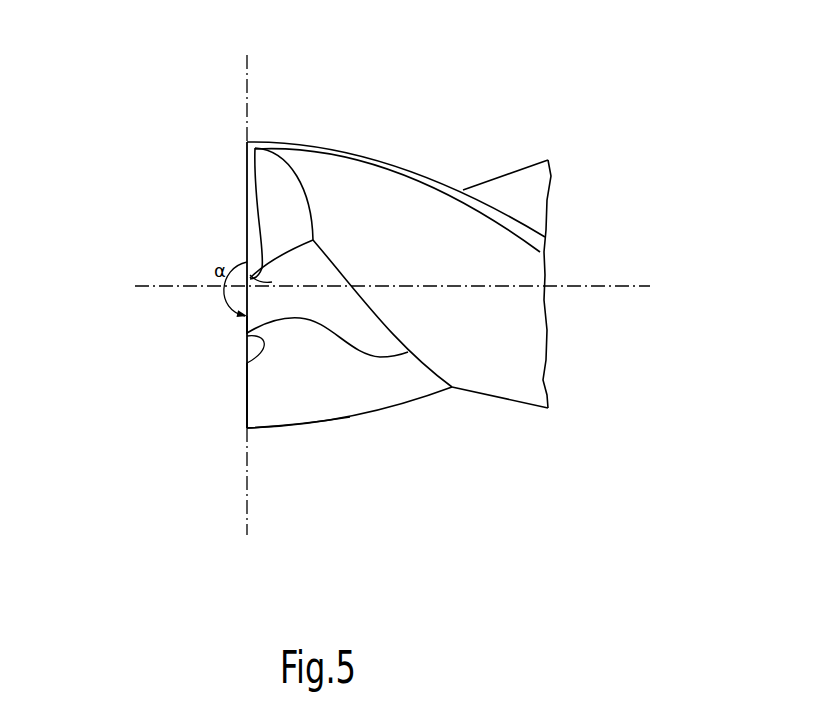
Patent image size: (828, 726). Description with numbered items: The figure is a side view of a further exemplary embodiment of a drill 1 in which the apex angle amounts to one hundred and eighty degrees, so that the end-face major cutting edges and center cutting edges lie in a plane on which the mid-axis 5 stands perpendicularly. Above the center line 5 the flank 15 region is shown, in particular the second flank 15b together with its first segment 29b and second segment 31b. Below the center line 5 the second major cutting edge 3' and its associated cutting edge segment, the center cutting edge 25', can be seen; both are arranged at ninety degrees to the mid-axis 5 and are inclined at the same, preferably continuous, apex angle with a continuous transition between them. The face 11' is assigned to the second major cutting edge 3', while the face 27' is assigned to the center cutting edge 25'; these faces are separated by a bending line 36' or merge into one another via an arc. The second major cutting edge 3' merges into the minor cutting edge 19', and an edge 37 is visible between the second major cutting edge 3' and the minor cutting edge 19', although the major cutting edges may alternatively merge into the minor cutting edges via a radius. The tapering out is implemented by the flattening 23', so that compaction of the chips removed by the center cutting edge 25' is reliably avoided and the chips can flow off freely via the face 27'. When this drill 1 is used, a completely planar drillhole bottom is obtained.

The drill 1 is at (172, 150).
The second major cutting edge 3' is at (153, 406).
The mid-axis 5 is at (615, 283).
The face 11' is at (349, 453).
The flank 15 is at (250, 227).
The second flank 15b is at (293, 190).
The minor cutting edge 19' is at (407, 494).
The flattening 23' is at (415, 389).
The center cutting edge 25' is at (153, 318).
The face 27' is at (279, 341).
The first segment 29b is at (272, 173).
The second segment 31b is at (247, 257).
The bending line 36' is at (143, 367).
The edge 37 is at (247, 428).